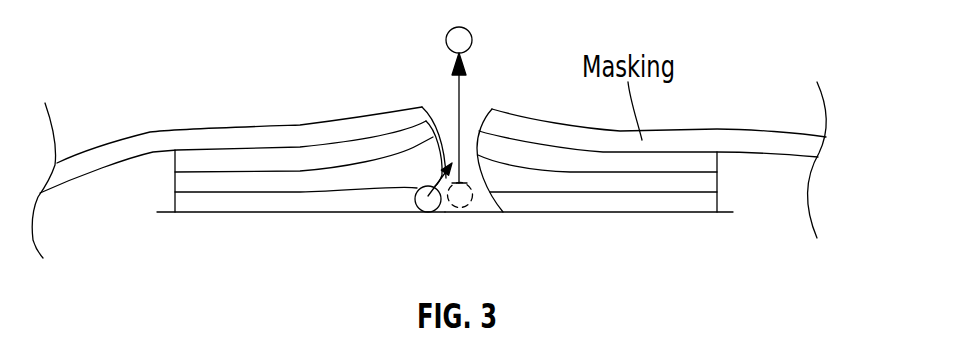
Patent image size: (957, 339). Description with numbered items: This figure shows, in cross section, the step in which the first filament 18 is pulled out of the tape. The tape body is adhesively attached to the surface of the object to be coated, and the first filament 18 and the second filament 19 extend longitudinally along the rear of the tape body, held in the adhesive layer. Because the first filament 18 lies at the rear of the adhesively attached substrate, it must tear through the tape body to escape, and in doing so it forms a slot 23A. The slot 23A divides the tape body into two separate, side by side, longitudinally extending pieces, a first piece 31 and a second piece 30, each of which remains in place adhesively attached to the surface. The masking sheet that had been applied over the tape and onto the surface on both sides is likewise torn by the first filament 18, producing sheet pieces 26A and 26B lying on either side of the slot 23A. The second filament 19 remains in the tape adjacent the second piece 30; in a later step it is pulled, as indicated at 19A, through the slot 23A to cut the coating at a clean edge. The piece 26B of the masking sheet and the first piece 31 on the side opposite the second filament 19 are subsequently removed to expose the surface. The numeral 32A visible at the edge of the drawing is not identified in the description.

The masking sheet piece 26A is at (235, 133).
The masking sheet portion 26B is at (748, 138).
The pulling of second filament 19A is at (448, 168).
The slot 23A is at (474, 136).
The second filament 19 is at (428, 213).
The first filament 18 is at (463, 210).
The second piece of tape body 30 is at (293, 225).
The first piece of tape body 31 is at (608, 222).
The element of adjacent figure (partial) 32A is at (723, 330).